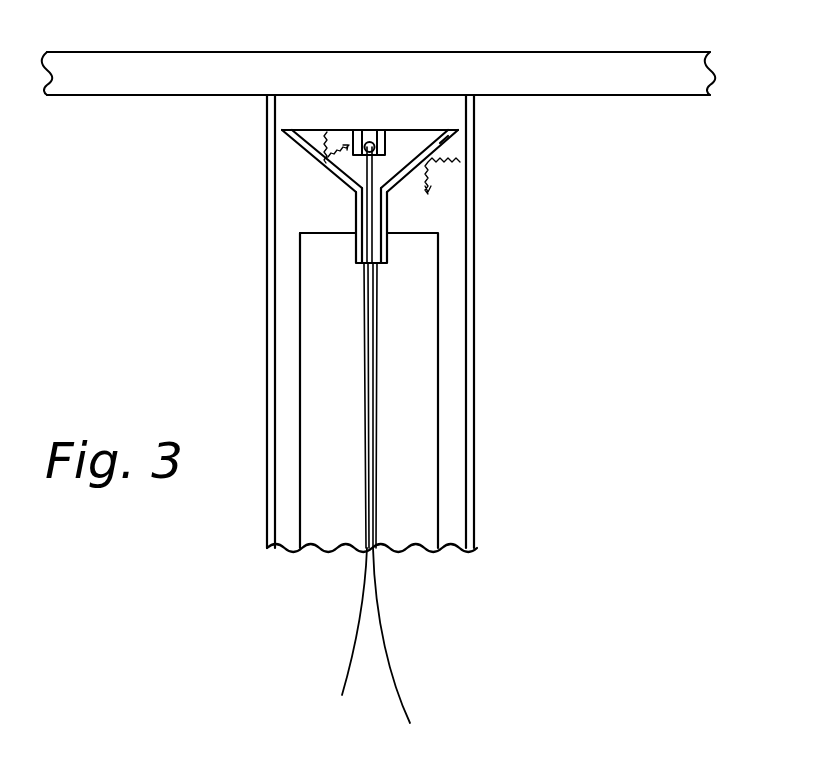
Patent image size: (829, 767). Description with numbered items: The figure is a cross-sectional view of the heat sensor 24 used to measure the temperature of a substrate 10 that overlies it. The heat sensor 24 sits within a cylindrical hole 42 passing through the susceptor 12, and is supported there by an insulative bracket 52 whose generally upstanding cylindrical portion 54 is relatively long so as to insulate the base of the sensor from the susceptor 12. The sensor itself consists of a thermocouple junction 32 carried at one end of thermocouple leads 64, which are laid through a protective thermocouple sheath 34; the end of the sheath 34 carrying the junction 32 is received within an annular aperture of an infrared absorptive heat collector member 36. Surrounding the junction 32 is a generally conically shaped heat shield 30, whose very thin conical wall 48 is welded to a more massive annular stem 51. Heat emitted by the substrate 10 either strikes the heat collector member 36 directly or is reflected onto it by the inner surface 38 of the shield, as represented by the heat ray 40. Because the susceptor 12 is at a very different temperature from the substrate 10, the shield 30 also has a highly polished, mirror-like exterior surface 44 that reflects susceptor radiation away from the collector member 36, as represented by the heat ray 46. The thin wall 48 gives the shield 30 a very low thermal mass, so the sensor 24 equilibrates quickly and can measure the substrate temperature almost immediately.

The substrate 10 is at (678, 70).
The susceptor 12 is at (683, 222).
The heat sensor 24 is at (302, 240).
The heat shield 30 is at (452, 153).
The thermocouple junction 32 is at (374, 130).
The thermocouple sheath 34 is at (380, 396).
The heat collector member 36 is at (392, 138).
The inner surface 38 is at (324, 131).
The heat ray 40 is at (335, 130).
The cylindrical hole 42 is at (447, 210).
The exterior surface 44 is at (470, 150).
The heat ray 46 is at (442, 163).
The conical wall 48 is at (318, 163).
The annular stem 51 is at (438, 233).
The insulative bracket 52 is at (472, 320).
The cylindrical portion 54 is at (410, 375).
The thermocouple leads 64 is at (385, 655).